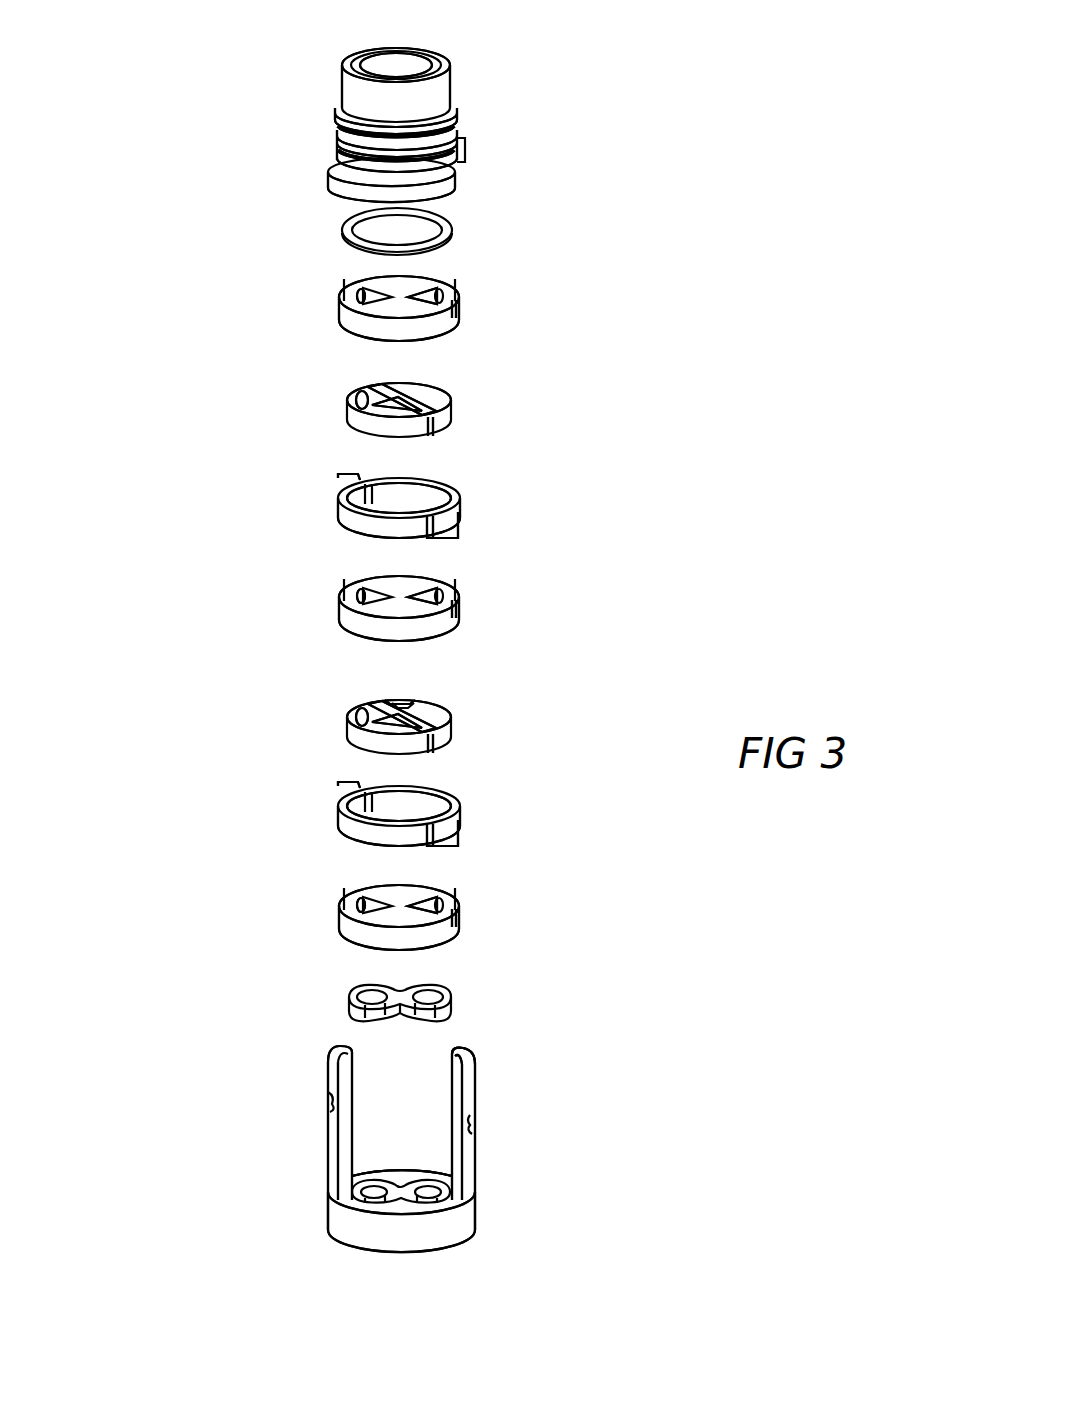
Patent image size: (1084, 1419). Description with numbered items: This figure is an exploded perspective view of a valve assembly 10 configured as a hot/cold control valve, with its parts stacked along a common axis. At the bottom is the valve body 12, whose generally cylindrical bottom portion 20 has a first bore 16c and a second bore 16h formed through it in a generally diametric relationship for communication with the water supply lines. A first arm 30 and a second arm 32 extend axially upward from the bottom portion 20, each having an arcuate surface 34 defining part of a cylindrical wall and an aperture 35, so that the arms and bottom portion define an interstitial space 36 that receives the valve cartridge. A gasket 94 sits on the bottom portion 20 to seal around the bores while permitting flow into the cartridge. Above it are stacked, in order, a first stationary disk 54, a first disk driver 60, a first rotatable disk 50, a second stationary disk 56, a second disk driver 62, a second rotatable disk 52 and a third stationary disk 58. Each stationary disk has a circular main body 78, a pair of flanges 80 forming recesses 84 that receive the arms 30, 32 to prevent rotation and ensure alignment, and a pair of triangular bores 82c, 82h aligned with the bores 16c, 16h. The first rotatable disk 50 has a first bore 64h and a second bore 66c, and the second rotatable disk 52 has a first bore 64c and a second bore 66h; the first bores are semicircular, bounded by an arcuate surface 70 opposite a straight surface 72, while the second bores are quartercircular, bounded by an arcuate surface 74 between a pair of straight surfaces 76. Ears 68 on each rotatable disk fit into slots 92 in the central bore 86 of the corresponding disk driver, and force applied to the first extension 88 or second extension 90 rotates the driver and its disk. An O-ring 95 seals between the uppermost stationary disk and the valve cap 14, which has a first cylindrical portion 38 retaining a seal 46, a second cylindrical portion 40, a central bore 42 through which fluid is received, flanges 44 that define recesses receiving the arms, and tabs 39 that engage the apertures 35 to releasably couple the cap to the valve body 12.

The valve assembly 10 is at (633, 53).
The valve body 12 is at (312, 1215).
The valve cap 14 is at (453, 82).
The first bore 16c is at (472, 1225).
The second bore 16h is at (368, 1203).
The bottom portion 20 is at (438, 1238).
The first arm 30 is at (332, 1158).
The second arm 32 is at (470, 1190).
The arcuate surface 34 is at (332, 1098).
The apertures 35 is at (473, 1078).
The interstitial space 36 is at (413, 1078).
The first cylindrical portion 38 is at (350, 93).
The tabs 39 is at (460, 168).
The second cylindrical portion 40 is at (333, 147).
The central bore 42 is at (393, 62).
The flanges 44 is at (467, 143).
The seal 46 is at (455, 122).
The first rotatable disk 50 is at (452, 722).
The second rotatable disk 52 is at (450, 410).
The first stationary disk 54 is at (462, 917).
The second stationary disk 56 is at (463, 608).
The third stationary disk 58 is at (463, 308).
The first disk driver 60 is at (458, 813).
The second disk driver 62 is at (462, 503).
The first bore 64c is at (433, 398).
The first bore 64h is at (357, 712).
The second bore 66c is at (428, 703).
The second bore 66h is at (377, 417).
The ears 68 is at (430, 428).
The arcuate surface 70 is at (433, 397).
The straight surface 72 is at (400, 403).
The arcuate surface 74 is at (410, 700).
The straight surfaces 76 is at (387, 702).
The main body 78 is at (380, 308).
The flanges 80 is at (360, 327).
The bore 82c is at (450, 288).
The bore 82h is at (357, 298).
The recesses 84 is at (458, 325).
The central bore 86 is at (423, 495).
The first extension 88 is at (343, 787).
The second extension 90 is at (342, 477).
The slots 92 is at (340, 518).
The gasket 94 is at (348, 1002).
The O-ring 95 is at (347, 230).